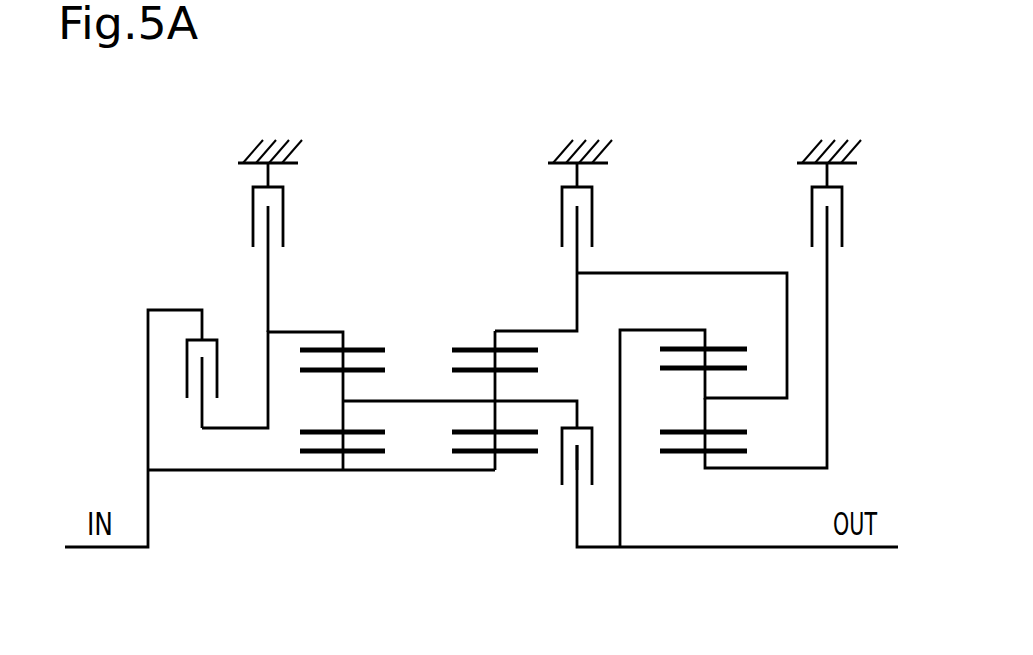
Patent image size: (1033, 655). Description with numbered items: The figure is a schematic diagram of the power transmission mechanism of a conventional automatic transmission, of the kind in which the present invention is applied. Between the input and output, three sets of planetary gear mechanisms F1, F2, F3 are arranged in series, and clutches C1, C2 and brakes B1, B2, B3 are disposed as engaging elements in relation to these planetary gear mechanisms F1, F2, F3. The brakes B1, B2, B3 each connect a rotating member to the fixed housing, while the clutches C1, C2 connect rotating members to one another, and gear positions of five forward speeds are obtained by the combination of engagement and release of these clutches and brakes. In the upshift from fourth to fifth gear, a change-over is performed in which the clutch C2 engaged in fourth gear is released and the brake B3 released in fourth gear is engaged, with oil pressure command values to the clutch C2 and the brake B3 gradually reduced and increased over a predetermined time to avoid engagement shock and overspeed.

The brake B1 is at (253, 214).
The brake B2 is at (562, 213).
The brake B3 is at (812, 213).
The clutch C1 is at (218, 368).
The clutch C2 is at (592, 456).
The planetary gear mechanism F1 is at (347, 485).
The planetary gear mechanism F2 is at (497, 485).
The planetary gear mechanism F3 is at (707, 485).